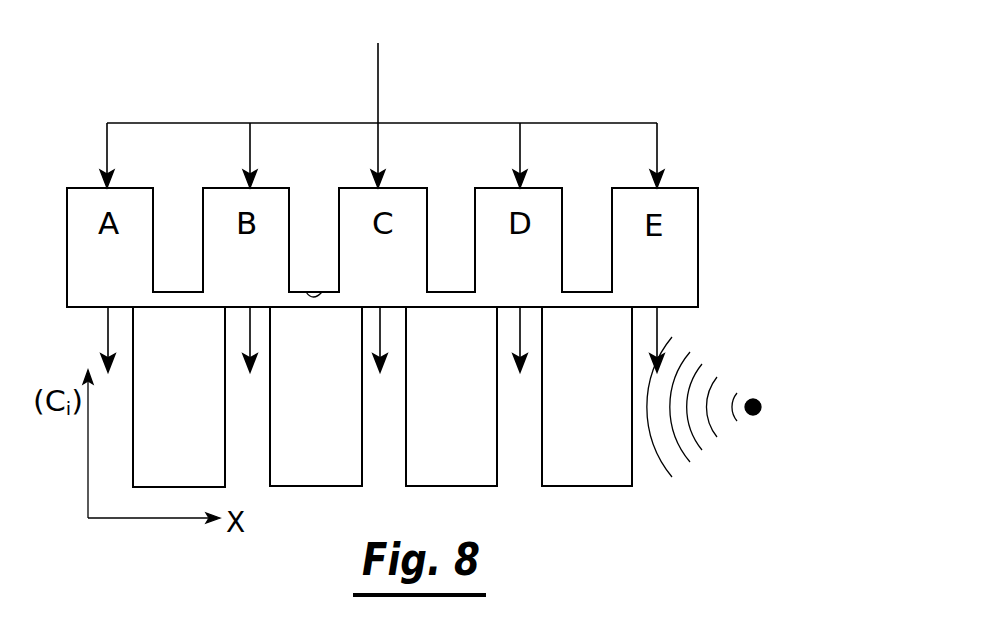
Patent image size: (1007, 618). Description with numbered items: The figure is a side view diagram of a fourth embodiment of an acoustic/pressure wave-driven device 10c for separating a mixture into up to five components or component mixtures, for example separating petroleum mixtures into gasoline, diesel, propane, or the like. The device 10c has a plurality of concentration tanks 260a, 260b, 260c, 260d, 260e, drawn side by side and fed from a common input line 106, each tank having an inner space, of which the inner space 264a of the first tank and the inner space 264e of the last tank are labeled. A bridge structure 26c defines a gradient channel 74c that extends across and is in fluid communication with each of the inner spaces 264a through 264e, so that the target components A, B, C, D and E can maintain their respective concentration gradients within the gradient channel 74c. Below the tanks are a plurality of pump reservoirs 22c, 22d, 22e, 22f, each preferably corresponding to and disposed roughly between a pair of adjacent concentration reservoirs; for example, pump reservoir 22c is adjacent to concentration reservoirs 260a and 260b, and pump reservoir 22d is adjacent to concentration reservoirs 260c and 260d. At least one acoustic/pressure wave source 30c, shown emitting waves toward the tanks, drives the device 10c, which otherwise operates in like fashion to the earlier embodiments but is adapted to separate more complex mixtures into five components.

The acoustic/pressure wave-driven device 10c is at (700, 79).
The input signal line 106 is at (378, 85).
The concentration tank 260a is at (67, 200).
The concentration tank 260b is at (203, 203).
The concentration tank 260c is at (339, 203).
The concentration tank 260d is at (475, 203).
The concentration tank 260e is at (612, 203).
The inner space 264a is at (72, 270).
The inner space 264e is at (698, 258).
The bridge structure 26c is at (180, 291).
The gradient channel 74c is at (322, 292).
The pump reservoir 22c is at (163, 487).
The pump reservoir 22d is at (334, 486).
The pump reservoir 22e is at (453, 486).
The pump reservoir 22f is at (594, 486).
The acoustic/pressure wave source 30c is at (755, 396).